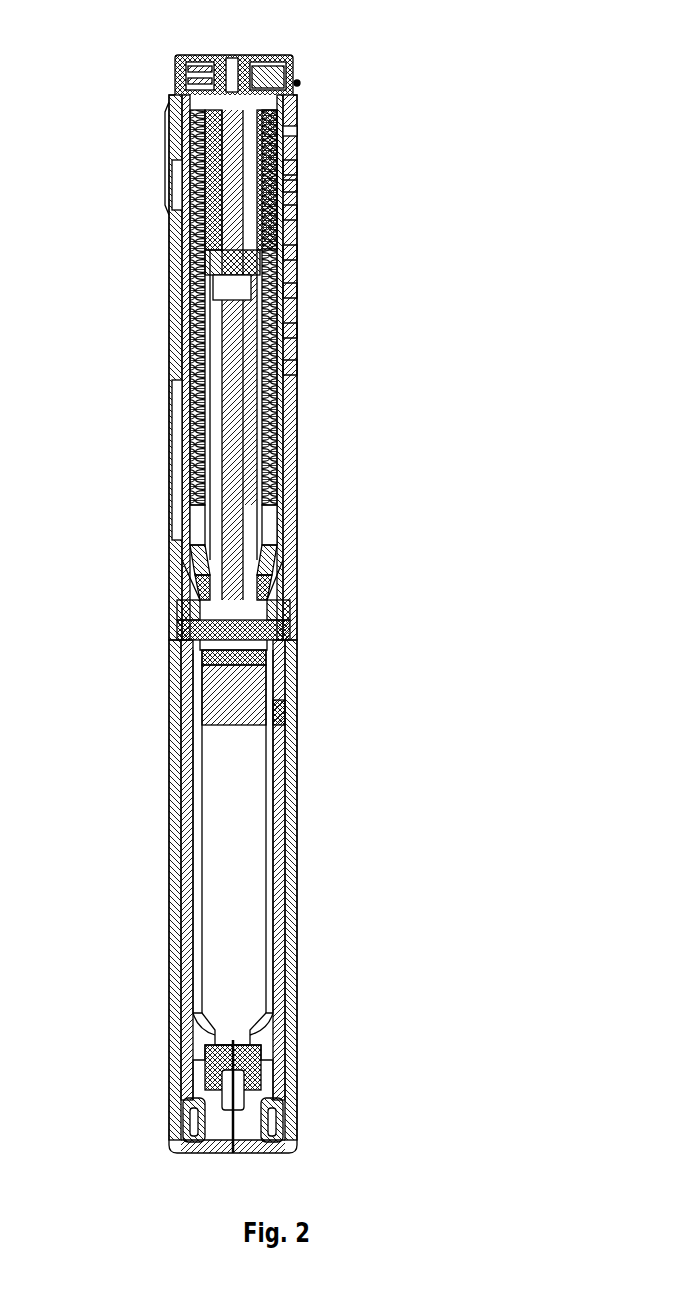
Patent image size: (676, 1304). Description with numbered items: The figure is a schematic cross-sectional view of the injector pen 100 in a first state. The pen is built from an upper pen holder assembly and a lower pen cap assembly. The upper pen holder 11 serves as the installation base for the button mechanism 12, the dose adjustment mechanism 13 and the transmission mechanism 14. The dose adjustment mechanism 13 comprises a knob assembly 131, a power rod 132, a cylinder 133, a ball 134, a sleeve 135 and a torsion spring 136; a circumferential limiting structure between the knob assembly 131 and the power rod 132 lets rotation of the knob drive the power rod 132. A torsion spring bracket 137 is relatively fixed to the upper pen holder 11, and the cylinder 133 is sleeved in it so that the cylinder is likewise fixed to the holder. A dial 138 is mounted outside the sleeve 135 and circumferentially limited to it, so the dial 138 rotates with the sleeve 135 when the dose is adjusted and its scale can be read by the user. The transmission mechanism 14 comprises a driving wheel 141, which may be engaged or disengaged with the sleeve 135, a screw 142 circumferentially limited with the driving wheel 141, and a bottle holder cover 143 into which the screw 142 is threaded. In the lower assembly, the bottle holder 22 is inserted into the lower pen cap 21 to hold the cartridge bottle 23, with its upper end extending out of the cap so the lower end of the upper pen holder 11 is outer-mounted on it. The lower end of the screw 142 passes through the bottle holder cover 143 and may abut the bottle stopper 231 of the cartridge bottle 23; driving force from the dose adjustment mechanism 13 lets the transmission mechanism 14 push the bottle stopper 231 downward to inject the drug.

The injector pen 100 is at (100, 106).
The upper pen holder 11 is at (169, 435).
The button mechanism 12 is at (299, 83).
The dose adjustment mechanism 13 is at (311, 307).
The knob assembly 131 is at (298, 131).
The power rod 132 is at (298, 186).
The cylinder 133 is at (298, 213).
The ball 134 is at (298, 252).
The sleeve 135 is at (298, 290).
The torsion spring 136 is at (298, 330).
The torsion spring bracket 137 is at (298, 172).
The dial 138 is at (330, 369).
The transmission mechanism 14 is at (303, 592).
The driving wheel 141 is at (298, 592).
The screw 142 is at (298, 543).
The bottle holder cover 143 is at (281, 625).
The lower pen cap 21 is at (169, 835).
The bottle holder 22 is at (169, 673).
The cartridge bottle 23 is at (302, 847).
The bottle stopper 231 is at (298, 712).